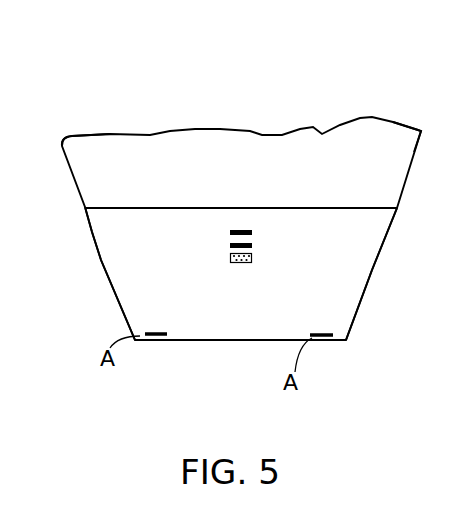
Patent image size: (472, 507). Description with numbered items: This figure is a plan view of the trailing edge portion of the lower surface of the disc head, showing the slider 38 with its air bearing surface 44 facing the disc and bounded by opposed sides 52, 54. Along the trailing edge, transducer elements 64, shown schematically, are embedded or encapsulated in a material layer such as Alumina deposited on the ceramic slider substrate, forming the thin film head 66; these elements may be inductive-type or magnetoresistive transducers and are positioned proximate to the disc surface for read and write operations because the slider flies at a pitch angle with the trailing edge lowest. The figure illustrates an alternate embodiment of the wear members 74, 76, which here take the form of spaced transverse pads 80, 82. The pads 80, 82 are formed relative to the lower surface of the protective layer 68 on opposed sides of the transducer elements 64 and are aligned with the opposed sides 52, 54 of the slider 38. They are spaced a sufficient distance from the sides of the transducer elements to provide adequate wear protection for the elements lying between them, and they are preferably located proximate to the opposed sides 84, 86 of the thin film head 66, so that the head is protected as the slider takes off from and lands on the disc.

The slider 38 is at (374, 100).
The air bearing surface 44 is at (248, 176).
The opposed side 52 is at (70, 170).
The opposed side 54 is at (417, 150).
The transducer elements 64 is at (263, 246).
The thin film head 66 is at (388, 244).
The protective layer 68 is at (252, 301).
The wear member 74 is at (182, 323).
The wear member 76 is at (340, 326).
The spaced transverse pad 80 is at (152, 338).
The spaced transverse pad 82 is at (323, 338).
The opposed side of the thin film head 84 is at (100, 260).
The opposed side of the thin film head 86 is at (367, 284).